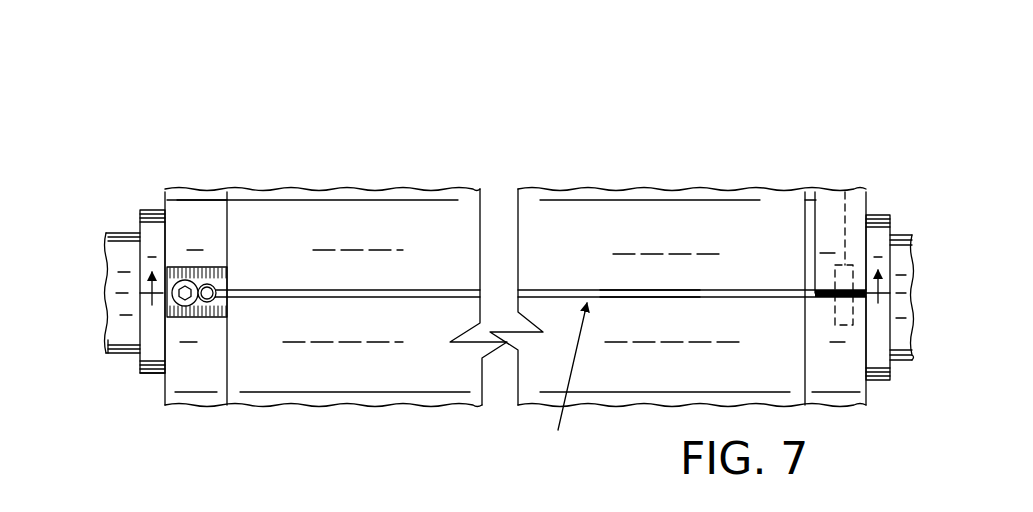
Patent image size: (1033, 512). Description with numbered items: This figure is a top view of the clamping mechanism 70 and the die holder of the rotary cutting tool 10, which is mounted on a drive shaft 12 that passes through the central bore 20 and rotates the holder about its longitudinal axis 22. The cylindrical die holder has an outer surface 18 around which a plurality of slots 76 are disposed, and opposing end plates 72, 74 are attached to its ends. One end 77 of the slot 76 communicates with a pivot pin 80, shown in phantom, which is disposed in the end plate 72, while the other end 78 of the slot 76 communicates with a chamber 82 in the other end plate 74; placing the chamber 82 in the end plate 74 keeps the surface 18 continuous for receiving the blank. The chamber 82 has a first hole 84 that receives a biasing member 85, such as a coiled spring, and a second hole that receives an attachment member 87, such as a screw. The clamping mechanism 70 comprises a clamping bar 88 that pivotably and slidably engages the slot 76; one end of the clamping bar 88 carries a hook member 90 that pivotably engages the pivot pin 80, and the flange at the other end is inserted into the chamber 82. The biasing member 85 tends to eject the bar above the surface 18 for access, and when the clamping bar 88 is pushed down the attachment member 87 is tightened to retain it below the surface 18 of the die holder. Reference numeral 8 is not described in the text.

The rotary cutting tool 10 is at (200, 118).
The collar 8 is at (135, 210).
The drive shaft 12 is at (115, 233).
The outer surface 18 is at (461, 250).
The central bore 20 is at (162, 380).
The longitudinal axis 22 is at (115, 355).
The clamping mechanism 70 is at (560, 384).
The end plate 72 is at (865, 192).
The end plate 74 is at (197, 207).
The slot 76 is at (637, 300).
The one end of the slot 77 is at (815, 220).
The other end of the slot 78 is at (227, 288).
The pivot pin 80 is at (850, 187).
The chamber 82 is at (163, 193).
The first hole 84 is at (203, 312).
The biasing member 85 is at (225, 295).
The attachment member 87 is at (183, 312).
The clamping bar 88 is at (408, 295).
The hook member 90 is at (832, 303).